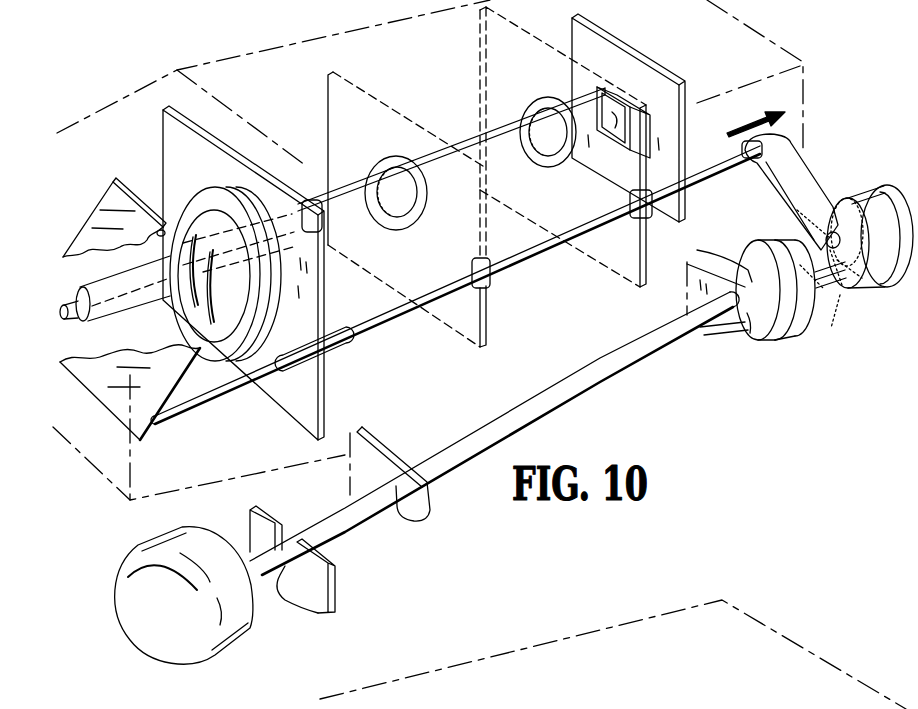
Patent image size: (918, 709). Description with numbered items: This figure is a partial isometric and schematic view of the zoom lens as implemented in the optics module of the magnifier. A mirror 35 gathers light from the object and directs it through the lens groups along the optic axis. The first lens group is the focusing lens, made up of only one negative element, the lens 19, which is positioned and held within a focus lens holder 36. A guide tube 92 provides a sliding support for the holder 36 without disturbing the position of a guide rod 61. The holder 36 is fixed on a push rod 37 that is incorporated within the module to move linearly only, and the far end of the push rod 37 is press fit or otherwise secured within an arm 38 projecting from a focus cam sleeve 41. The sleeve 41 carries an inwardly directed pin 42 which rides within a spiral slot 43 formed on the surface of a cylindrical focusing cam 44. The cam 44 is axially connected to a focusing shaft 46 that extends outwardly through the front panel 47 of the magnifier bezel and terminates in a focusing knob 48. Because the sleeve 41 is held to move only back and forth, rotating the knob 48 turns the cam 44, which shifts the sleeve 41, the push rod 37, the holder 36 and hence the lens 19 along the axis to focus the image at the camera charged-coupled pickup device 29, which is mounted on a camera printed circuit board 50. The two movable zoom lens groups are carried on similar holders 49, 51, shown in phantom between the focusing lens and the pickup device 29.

The lens 19 is at (247, 313).
The camera charged-coupled pickup device 29 is at (623, 97).
The mirror 35 is at (107, 207).
The focus lens holder 36 is at (202, 162).
The push rod 37 is at (517, 262).
The arm 38 is at (800, 177).
The focus cam sleeve 41 is at (884, 241).
The pin 42 is at (843, 263).
The spiral slot 43 is at (830, 330).
The cylindrical focusing cam 44 is at (747, 340).
The focusing shaft 46 is at (618, 380).
The front panel 47 is at (337, 587).
The focusing knob 48 is at (245, 622).
The holder 49 is at (370, 153).
The camera printed circuit board 50 is at (607, 50).
The holder 51 is at (530, 80).
The guide rod 61 is at (318, 203).
The guide tube 92 is at (148, 297).